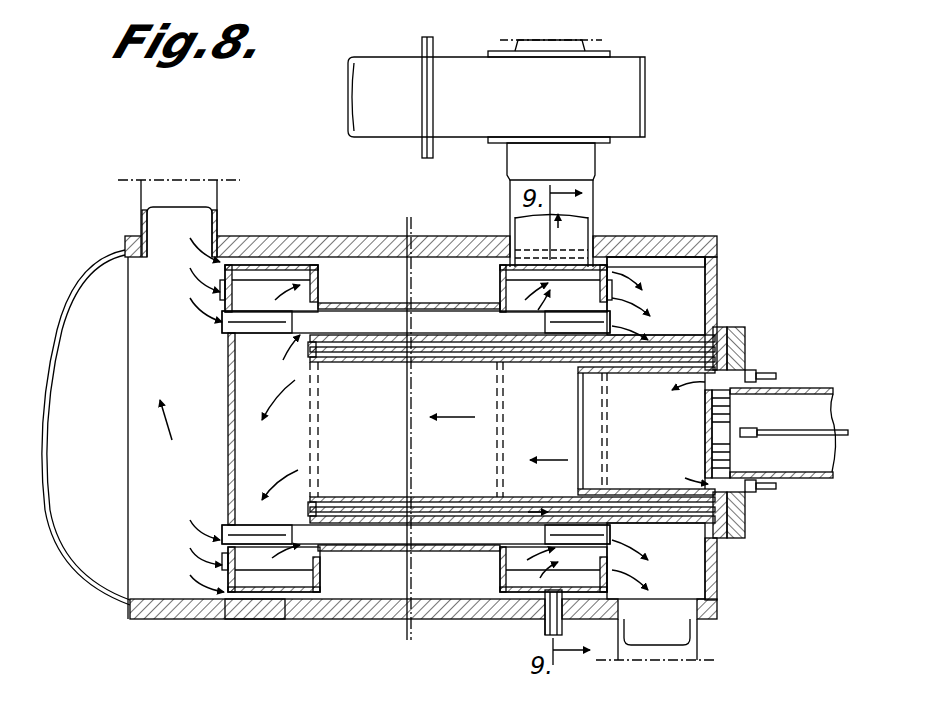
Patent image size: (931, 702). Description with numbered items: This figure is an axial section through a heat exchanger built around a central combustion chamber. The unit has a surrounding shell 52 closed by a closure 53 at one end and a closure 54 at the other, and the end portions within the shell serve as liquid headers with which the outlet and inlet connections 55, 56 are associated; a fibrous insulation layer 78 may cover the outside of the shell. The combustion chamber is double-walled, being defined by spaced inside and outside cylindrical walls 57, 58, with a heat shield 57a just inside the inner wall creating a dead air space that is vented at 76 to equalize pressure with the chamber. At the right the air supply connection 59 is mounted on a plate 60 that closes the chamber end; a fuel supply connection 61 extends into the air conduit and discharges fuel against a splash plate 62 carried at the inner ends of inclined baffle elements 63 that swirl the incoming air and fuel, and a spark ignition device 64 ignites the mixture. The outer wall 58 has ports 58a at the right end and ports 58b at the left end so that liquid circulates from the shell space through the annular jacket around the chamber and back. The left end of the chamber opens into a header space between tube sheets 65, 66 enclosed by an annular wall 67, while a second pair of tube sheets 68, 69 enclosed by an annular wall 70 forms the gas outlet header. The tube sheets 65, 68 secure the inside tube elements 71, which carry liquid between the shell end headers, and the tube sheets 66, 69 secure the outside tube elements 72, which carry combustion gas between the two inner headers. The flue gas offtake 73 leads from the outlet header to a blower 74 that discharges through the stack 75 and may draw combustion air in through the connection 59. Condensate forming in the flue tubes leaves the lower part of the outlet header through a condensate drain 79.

The surrounding shell 52 is at (358, 598).
The closure 53 is at (718, 290).
The closure 54 is at (84, 285).
The outlet connection 55 is at (698, 646).
The inlet connection 56 is at (141, 197).
The inside cylindrical wall 57 is at (660, 378).
The heat shield 57a is at (660, 486).
The outside cylindrical wall 58 is at (540, 360).
The ports or apertures 58a is at (668, 350).
The ports or apertures 58b is at (330, 362).
The air supply connection 59 is at (818, 388).
The plate 60 is at (746, 528).
The fuel supply connection 61 is at (848, 428).
The splash plate 62 is at (705, 441).
The baffle elements 63 is at (735, 410).
The spark ignition device 64 is at (752, 370).
The tube sheet 65 is at (228, 358).
The tube sheet 66 is at (337, 268).
The annular wall 67 is at (270, 265).
The tube sheet 68 is at (640, 238).
The tube sheet 69 is at (503, 270).
The annular wall 70 is at (515, 605).
The inside tube elements 71 is at (272, 300).
The outside tube elements 72 is at (411, 250).
The flue gas offtake 73 is at (594, 198).
The blower 74 is at (635, 68).
The offtake or stack 75 is at (365, 92).
The vent 76 is at (572, 368).
The fibrous insulation layer 78 is at (243, 612).
The condensate drain 79 is at (545, 632).